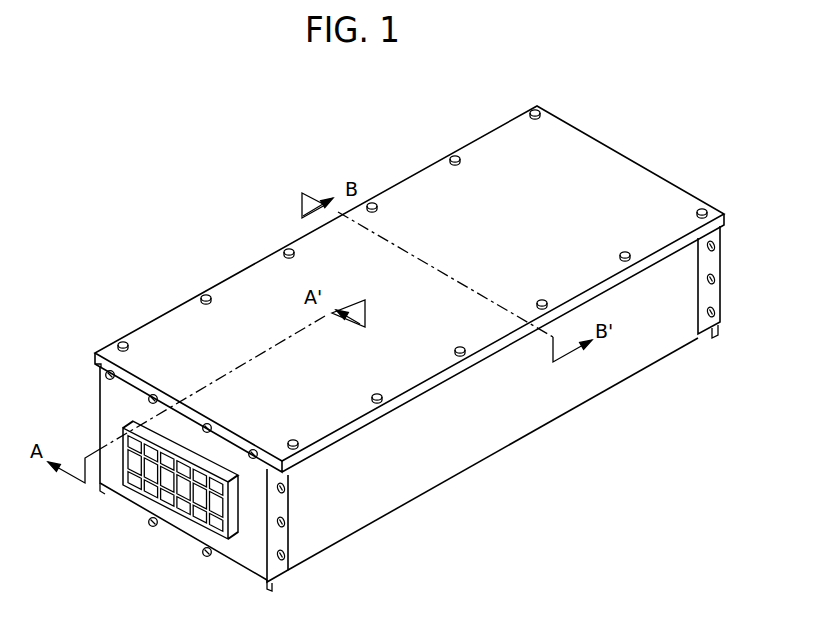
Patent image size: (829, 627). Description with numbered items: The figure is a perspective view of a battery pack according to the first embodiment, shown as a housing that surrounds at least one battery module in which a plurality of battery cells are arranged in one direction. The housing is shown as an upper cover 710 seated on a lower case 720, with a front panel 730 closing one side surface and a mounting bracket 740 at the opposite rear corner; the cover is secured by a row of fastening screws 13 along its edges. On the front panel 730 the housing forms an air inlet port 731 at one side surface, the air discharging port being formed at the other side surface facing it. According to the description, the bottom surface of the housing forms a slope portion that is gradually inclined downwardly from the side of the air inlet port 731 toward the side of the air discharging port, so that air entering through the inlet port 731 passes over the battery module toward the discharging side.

The upper cover 710 is at (630, 182).
The lower case body 720 is at (487, 437).
The front panel 730 is at (115, 492).
The air inlet port 731 is at (175, 498).
The mounting bracket 740 is at (722, 262).
The fastening screws 13 is at (201, 297).